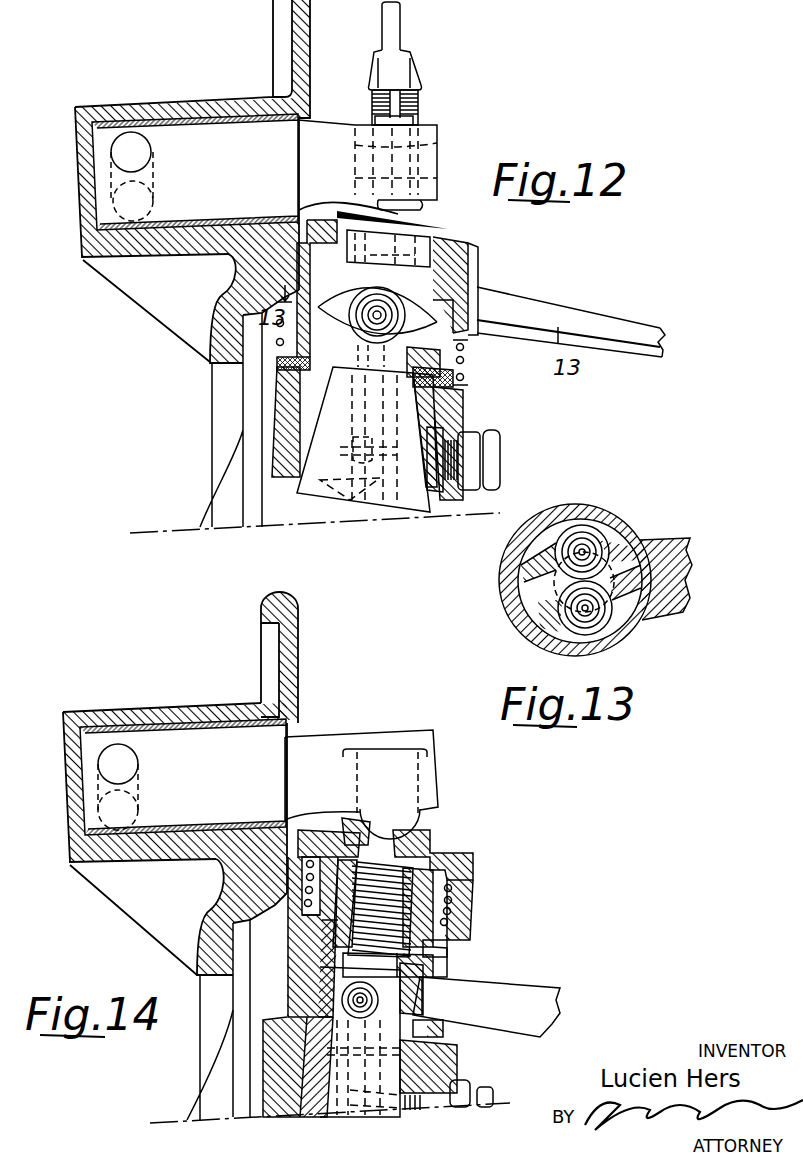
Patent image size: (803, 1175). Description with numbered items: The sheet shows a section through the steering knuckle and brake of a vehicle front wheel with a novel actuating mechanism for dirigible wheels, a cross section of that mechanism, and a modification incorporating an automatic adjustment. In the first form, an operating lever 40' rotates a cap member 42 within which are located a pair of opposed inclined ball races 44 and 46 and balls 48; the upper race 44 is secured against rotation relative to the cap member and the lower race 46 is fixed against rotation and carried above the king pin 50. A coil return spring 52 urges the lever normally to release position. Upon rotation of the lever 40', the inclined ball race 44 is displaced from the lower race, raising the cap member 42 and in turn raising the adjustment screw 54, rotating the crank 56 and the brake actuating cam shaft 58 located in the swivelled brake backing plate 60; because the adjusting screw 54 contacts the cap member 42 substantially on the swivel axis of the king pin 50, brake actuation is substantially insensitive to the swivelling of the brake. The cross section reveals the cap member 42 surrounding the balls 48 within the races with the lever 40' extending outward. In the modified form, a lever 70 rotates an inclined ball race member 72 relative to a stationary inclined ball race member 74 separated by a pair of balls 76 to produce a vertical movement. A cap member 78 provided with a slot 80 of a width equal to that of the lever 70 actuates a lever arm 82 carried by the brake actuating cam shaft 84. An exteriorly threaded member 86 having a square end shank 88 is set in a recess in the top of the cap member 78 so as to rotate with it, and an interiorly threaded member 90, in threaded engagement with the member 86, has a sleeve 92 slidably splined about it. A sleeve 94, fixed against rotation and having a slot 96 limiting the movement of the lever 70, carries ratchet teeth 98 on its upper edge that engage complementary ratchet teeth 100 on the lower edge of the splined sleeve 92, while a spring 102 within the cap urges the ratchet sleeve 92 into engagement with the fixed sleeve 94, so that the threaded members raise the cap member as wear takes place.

In FIG. 12, the operating lever 40' is at (585, 319).
In FIG. 13, the operating lever 40' is at (698, 569).
In FIG. 12, the cap member 42 is at (465, 257).
In FIG. 13, the cap member 42 is at (618, 512).
In FIG. 12, the inclined ball race 44 is at (435, 300).
In FIG. 12, the inclined ball race 46 is at (322, 348).
In FIG. 13, the inclined ball race 46 is at (537, 588).
In FIG. 12, the balls 48 is at (387, 323).
In FIG. 13, the balls 48 is at (590, 620).
In FIG. 12, the king pin 50 is at (387, 497).
In FIG. 12, the coil return spring 52 is at (462, 378).
In FIG. 12, the adjustment screw 54 is at (417, 107).
In FIG. 12, the crank 56 is at (427, 154).
In FIG. 12, the brake actuating cam shaft 58 is at (122, 150).
In FIG. 12, the brake backing plate 60 is at (227, 337).
In FIG. 14, the lever 70 is at (537, 1003).
In FIG. 14, the inclined ball race member 72 is at (432, 960).
In FIG. 14, the stationary inclined ball race member 74 is at (380, 1023).
In FIG. 14, the balls 76 is at (345, 1012).
In FIG. 14, the cap member 78 is at (460, 875).
In FIG. 14, the slot 80 is at (440, 955).
In FIG. 14, the lever arm 82 is at (412, 822).
In FIG. 14, the brake actuating cam shaft 84 is at (362, 748).
In FIG. 14, the exteriorly threaded member 86 is at (450, 905).
In FIG. 14, the square end shank 88 is at (392, 853).
In FIG. 14, the interiorly threaded member 90 is at (467, 862).
In FIG. 14, the sleeve 92 is at (245, 878).
In FIG. 14, the sleeve 94 is at (300, 955).
In FIG. 14, the slot 96 is at (447, 935).
In FIG. 14, the ratchet teeth 98 is at (307, 923).
In FIG. 14, the ratchet teeth 100 is at (300, 905).
In FIG. 14, the spring 102 is at (447, 913).